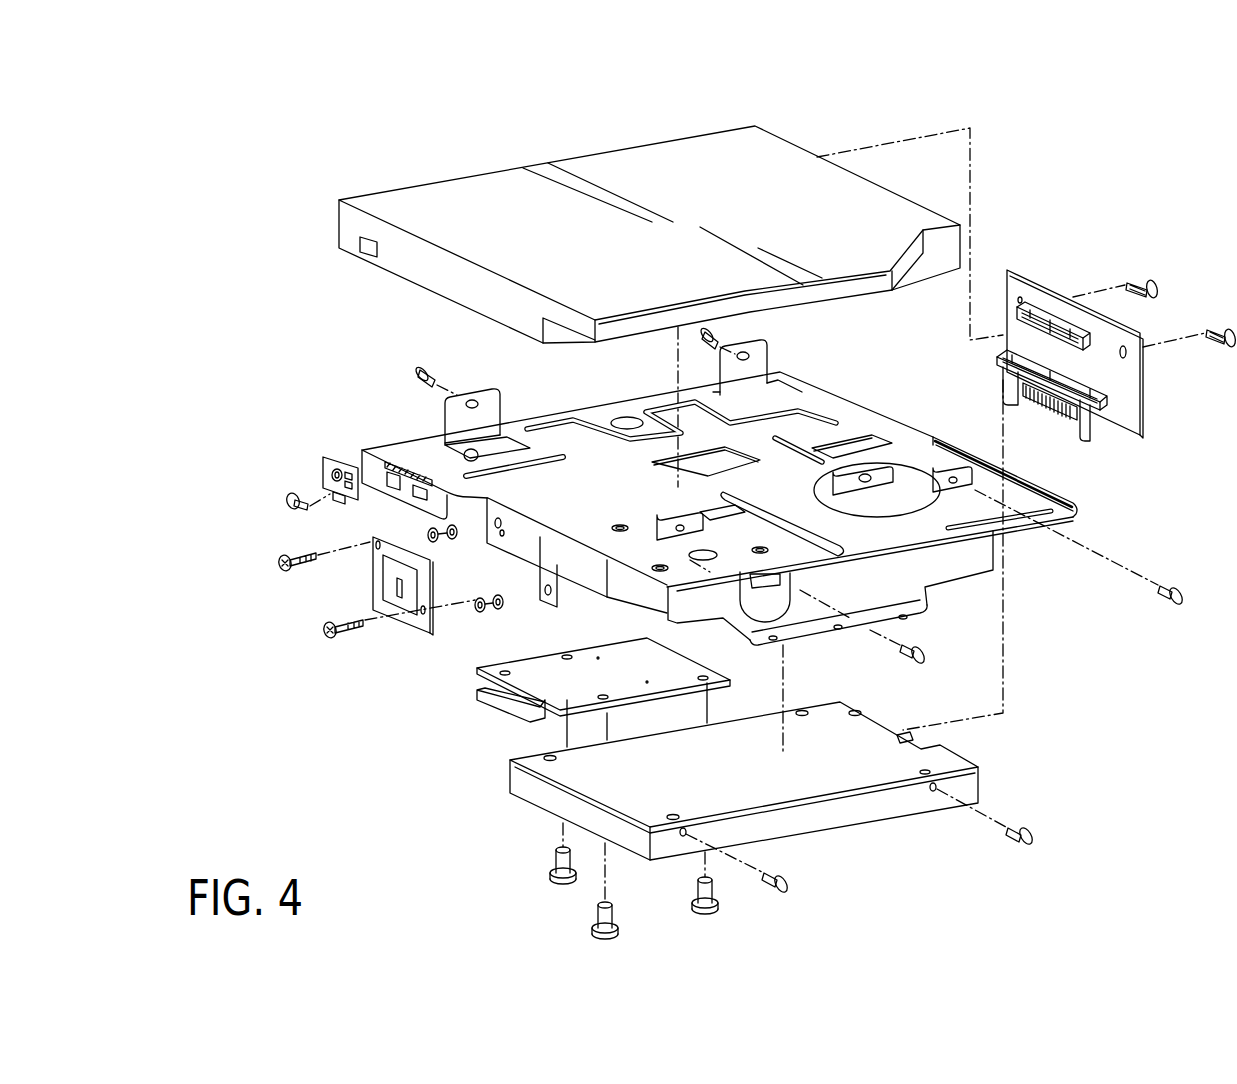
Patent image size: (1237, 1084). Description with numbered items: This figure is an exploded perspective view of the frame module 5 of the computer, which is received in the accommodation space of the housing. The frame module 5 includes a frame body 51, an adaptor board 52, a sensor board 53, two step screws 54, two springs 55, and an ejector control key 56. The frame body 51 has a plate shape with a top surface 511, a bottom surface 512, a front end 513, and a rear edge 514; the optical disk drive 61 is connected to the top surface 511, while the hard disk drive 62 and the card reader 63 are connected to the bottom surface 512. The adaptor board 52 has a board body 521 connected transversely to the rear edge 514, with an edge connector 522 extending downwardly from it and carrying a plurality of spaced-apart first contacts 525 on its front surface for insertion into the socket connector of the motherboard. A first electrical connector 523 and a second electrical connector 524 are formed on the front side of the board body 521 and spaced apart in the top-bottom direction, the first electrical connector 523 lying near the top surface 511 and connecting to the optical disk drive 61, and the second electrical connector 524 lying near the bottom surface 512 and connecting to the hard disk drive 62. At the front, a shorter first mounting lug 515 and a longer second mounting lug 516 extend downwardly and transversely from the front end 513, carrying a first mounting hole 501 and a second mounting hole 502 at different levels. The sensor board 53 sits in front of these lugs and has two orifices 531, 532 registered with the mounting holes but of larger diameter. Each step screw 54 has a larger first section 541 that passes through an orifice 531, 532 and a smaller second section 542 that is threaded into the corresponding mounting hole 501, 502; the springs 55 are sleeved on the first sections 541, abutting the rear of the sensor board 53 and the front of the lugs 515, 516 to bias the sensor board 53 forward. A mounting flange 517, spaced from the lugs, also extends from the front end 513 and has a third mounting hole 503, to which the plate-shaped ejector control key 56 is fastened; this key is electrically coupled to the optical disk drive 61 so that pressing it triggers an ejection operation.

The frame module 5 is at (300, 373).
The frame body 51 is at (775, 540).
The adaptor board 52 is at (1074, 351).
The sensor board 53 is at (350, 602).
The step screws 54 is at (319, 608).
The springs 55 is at (420, 530).
The ejector control key 56 is at (325, 470).
The optical disk drive 61 is at (327, 210).
The hard disk drive 62 is at (980, 757).
The card reader 63 is at (485, 712).
The first mounting hole 501 is at (497, 527).
The second mounting hole 502 is at (543, 592).
The third mounting hole 503 is at (408, 482).
The top surface 511 is at (887, 535).
The bottom surface 512 is at (947, 540).
The front end 513 is at (603, 560).
The rear edge 514 is at (875, 413).
The first mounting lug 515 is at (502, 535).
The second mounting lug 516 is at (555, 577).
The mounting flange 517 is at (372, 465).
The board body 521 is at (1130, 408).
The edge connector 522 is at (1050, 428).
The first electrical connector 523 is at (1050, 317).
The second electrical connector 524 is at (1023, 353).
The first contacts 525 is at (1047, 400).
The orifice 531 is at (377, 547).
The orifice 532 is at (423, 614).
The first section 541 is at (298, 566).
The second section 542 is at (310, 553).